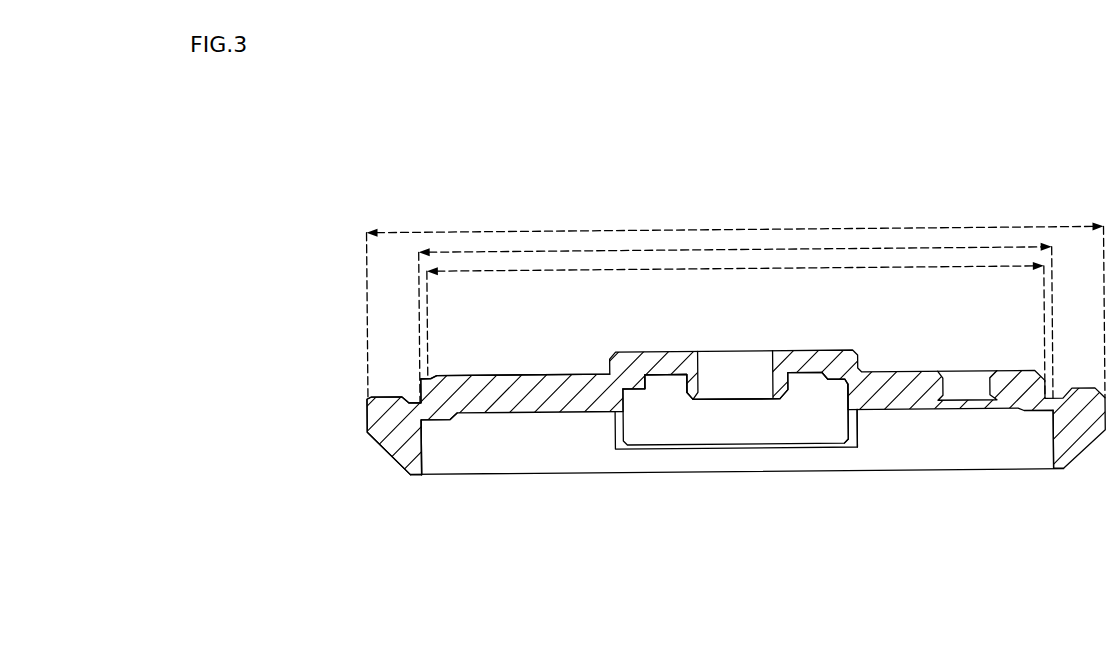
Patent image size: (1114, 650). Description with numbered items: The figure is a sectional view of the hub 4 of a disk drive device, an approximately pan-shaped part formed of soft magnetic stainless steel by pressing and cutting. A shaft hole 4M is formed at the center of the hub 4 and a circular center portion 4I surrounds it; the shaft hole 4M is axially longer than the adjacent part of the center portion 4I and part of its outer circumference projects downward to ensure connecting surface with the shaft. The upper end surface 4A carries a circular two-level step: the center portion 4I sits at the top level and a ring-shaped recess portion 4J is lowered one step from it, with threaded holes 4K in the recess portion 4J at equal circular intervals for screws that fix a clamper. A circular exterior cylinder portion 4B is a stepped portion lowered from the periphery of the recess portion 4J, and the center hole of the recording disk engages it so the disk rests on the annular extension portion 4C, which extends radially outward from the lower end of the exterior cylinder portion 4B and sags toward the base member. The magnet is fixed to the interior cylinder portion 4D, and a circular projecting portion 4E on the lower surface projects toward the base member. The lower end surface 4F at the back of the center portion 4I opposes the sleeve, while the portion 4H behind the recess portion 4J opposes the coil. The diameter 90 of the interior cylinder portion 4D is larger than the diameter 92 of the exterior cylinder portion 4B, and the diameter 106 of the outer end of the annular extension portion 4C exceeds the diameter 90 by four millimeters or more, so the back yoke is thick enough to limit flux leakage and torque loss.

The hub 4 is at (740, 605).
The upper end surface 4A is at (556, 367).
The exterior cylinder portion 4B is at (421, 382).
The annular extension portion 4C is at (385, 394).
The interior cylinder portion 4D is at (421, 437).
The circular projecting portion 4E is at (847, 428).
The lower end surface 4F is at (668, 375).
The portion opposing the coil 4H is at (533, 411).
The center portion 4I is at (660, 365).
The recess portion 4J is at (458, 372).
The threaded hole 4K is at (968, 389).
The shaft hole 4M is at (700, 372).
The diameter of the interior cylinder portion 90 is at (741, 249).
The diameter of the exterior cylinder portion 92 is at (813, 268).
The diameter of the outer circumference end of the annular extension portion 106 is at (931, 226).